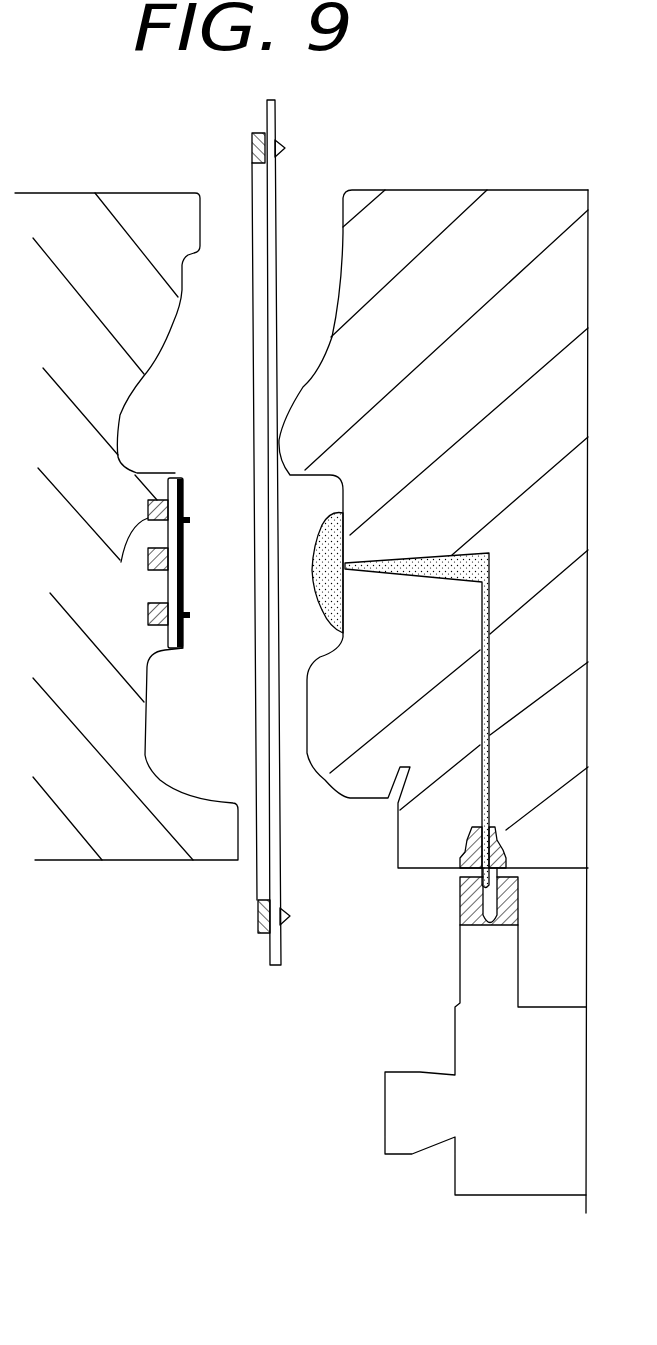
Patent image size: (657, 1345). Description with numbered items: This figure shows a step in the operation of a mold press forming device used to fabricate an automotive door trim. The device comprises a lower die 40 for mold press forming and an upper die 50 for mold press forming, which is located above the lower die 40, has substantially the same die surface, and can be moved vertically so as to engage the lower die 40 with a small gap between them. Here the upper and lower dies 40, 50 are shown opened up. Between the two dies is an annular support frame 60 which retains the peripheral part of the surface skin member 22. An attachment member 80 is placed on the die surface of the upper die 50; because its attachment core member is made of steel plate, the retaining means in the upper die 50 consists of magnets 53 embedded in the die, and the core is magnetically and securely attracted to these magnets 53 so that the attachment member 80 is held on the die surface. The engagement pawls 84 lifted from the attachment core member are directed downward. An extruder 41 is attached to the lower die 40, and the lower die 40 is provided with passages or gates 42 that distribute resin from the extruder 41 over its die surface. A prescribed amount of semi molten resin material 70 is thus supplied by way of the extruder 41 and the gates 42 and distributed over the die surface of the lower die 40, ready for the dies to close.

The surface skin member 22 is at (272, 295).
The lower die 40 is at (490, 499).
The extruder 41 is at (440, 1058).
The gates 42 is at (443, 582).
The upper die 50 is at (65, 557).
The magnets 53 is at (148, 605).
The support frame 60 is at (252, 155).
The semi molten resin material 70 is at (338, 529).
The attachment member 80 is at (196, 478).
The engagement pawls 84 is at (190, 614).